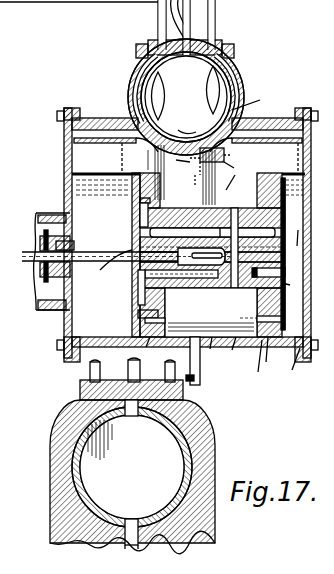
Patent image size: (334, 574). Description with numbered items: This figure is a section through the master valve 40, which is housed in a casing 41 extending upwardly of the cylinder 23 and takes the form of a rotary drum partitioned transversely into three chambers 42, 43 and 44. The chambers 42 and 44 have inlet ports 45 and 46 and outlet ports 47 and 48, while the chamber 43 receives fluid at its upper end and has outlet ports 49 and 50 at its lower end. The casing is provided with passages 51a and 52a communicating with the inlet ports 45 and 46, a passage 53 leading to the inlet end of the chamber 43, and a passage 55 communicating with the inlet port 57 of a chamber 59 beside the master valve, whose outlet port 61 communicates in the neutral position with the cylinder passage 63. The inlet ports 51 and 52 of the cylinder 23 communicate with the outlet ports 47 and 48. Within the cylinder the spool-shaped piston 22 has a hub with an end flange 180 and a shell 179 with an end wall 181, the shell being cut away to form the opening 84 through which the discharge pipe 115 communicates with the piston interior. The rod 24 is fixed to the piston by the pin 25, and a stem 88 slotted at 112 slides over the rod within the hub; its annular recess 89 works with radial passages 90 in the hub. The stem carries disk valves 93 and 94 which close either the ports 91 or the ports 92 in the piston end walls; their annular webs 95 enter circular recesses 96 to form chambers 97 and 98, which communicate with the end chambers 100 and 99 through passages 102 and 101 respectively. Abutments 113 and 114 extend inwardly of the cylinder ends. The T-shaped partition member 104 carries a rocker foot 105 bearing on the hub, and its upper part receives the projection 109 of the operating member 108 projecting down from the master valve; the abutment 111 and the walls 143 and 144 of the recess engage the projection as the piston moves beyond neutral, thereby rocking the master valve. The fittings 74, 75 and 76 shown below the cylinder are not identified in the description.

The passage 53 is at (206, 28).
The passage 51a is at (146, 52).
The passage 52a is at (234, 50).
The master valve 40 is at (160, 75).
The casing 41 is at (236, 80).
The chamber 42 is at (146, 80).
The chamber 43 is at (165, 80).
The chamber 44 is at (222, 73).
The inlet port 45 is at (140, 97).
The inlet port 46 is at (232, 90).
The outlet port 48 is at (253, 100).
The outlet port 50 is at (186, 97).
The operating member 108 is at (204, 120).
The cylinder 23 is at (282, 114).
The inlet port 51 is at (90, 134).
The inlet port 52 is at (270, 135).
The outlet port 47 is at (148, 151).
The outlet port 49 is at (165, 160).
The abutment 111 is at (224, 152).
The wall 144 is at (240, 168).
The wall 143 is at (180, 167).
The partition member 104 is at (286, 169).
The piston 22 is at (150, 186).
The passage 101 is at (182, 222).
The projection 109 is at (198, 178).
The rocker foot 105 is at (237, 184).
The radial passages 90 is at (236, 218).
The rod 24 is at (106, 260).
The passage 102 is at (140, 270).
The slot 112 is at (200, 265).
The pin 25 is at (220, 265).
The annular recess 89 is at (258, 305).
The disk valve 93 is at (140, 200).
The chamber 97 is at (140, 220).
The end wall 180 is at (138, 288).
The circular recesses 96 is at (138, 312).
The annular webs 95 is at (286, 208).
The abutment 114 is at (298, 236).
The chamber 98 is at (277, 271).
The disk valve 94 is at (292, 286).
The stem 88 is at (108, 263).
The abutment 113 is at (82, 246).
The end chamber 99 is at (82, 324).
The pipe 75 is at (90, 376).
The pipe 74 is at (128, 362).
The pipe 76 is at (178, 378).
The discharge pipe 115 is at (205, 366).
The ports 91 is at (145, 349).
The shell 179 is at (206, 348).
The opening 84 is at (231, 350).
The ports 92 is at (271, 349).
The end wall 181 is at (251, 362).
The end chamber 100 is at (296, 362).
The passage 55 is at (186, 396).
The chamber 59 is at (132, 467).
The inlet port 57 is at (130, 416).
The outlet port 61 is at (130, 520).
The cylinder passage 63 is at (130, 554).